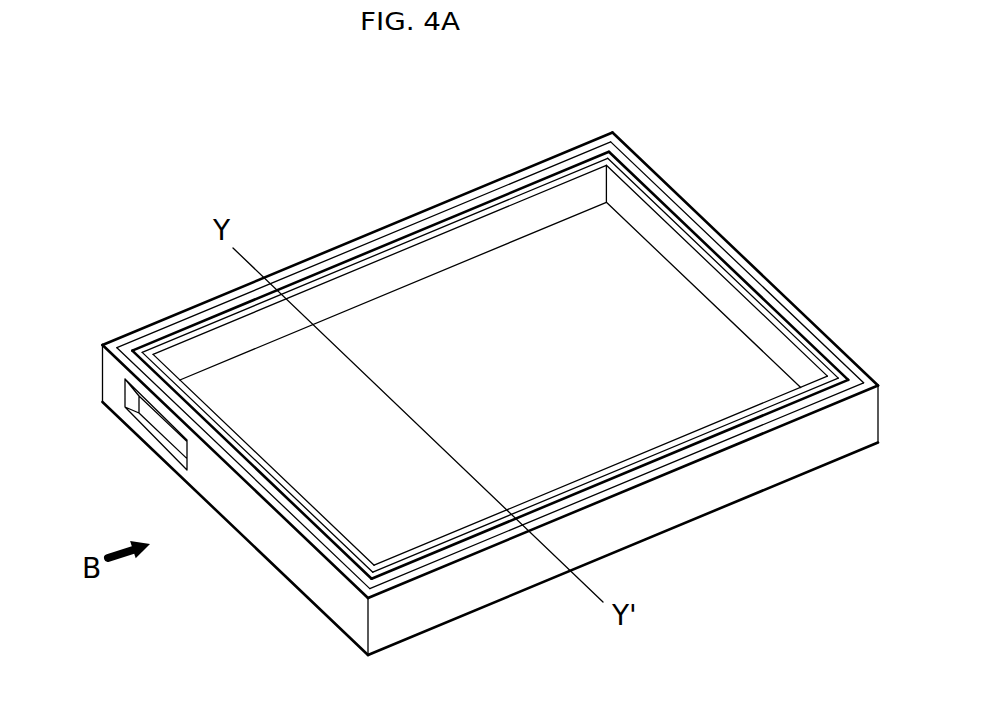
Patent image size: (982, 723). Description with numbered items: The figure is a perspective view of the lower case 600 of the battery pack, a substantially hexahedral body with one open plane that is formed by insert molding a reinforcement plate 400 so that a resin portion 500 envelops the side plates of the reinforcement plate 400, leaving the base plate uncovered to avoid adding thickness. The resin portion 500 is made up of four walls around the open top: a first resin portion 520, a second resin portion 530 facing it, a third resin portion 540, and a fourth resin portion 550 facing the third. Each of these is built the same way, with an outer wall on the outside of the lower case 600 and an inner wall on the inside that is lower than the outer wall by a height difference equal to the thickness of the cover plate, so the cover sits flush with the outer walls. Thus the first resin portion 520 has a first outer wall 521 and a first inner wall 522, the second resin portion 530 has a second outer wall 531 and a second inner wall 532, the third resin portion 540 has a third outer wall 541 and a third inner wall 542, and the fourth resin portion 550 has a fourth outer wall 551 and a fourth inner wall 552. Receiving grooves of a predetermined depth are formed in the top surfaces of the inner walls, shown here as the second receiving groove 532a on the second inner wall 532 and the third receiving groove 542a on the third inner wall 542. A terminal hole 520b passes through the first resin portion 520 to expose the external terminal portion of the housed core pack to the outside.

The reinforcement plate 400 is at (604, 270).
The resin portion 500 is at (148, 314).
The first resin portion 520 is at (217, 640).
The first outer wall 521 is at (268, 500).
The first inner wall 522 is at (320, 548).
The terminal hole 520b is at (150, 433).
The second resin portion 530 is at (872, 250).
The second outer wall 531 is at (717, 232).
The second inner wall 532 is at (787, 327).
The second receiving groove 532a is at (755, 285).
The third resin portion 540 is at (452, 108).
The third outer wall 541 is at (438, 208).
The third inner wall 542 is at (507, 205).
The third receiving groove 542a is at (382, 245).
The fourth resin portion 550 is at (804, 554).
The fourth outer wall 551 is at (750, 425).
The fourth inner wall 552 is at (673, 460).
The lower case 600 is at (279, 150).